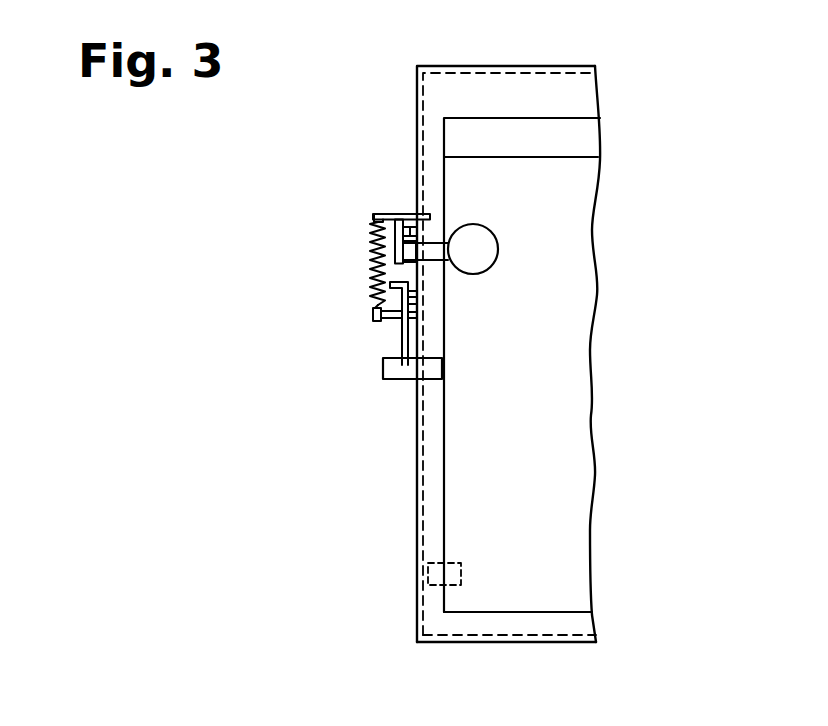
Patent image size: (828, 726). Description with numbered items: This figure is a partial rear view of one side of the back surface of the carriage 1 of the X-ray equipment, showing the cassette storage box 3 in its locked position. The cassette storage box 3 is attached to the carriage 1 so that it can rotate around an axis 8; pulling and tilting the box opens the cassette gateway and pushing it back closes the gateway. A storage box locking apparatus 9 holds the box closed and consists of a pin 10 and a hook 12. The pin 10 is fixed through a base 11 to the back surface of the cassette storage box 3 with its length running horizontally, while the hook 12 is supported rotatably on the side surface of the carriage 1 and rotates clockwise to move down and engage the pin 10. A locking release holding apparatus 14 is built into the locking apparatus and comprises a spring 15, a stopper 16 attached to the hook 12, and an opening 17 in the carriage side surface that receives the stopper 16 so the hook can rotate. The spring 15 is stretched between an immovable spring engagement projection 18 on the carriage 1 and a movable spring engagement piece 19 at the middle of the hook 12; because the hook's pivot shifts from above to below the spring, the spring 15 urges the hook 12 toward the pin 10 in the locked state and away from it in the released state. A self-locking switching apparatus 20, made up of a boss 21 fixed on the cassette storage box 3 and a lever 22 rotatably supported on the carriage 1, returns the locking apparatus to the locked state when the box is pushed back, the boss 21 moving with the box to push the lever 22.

The carriage 1 is at (422, 97).
The cassette storage box 3 is at (583, 241).
The axis 8 is at (430, 572).
The storage box locking apparatus 9 is at (483, 210).
The pin 10 is at (449, 250).
The base 11 is at (481, 264).
The hook 12 is at (407, 258).
The locking release holding apparatus 14 is at (308, 224).
The spring 15 is at (370, 260).
The stopper 16 is at (406, 216).
The opening 17 is at (413, 198).
The spring engagement projection 18 is at (381, 318).
The spring engagement piece 19 is at (345, 230).
The self-locking switching apparatus 20 is at (359, 392).
The boss 21 is at (392, 380).
The lever 22 is at (401, 338).